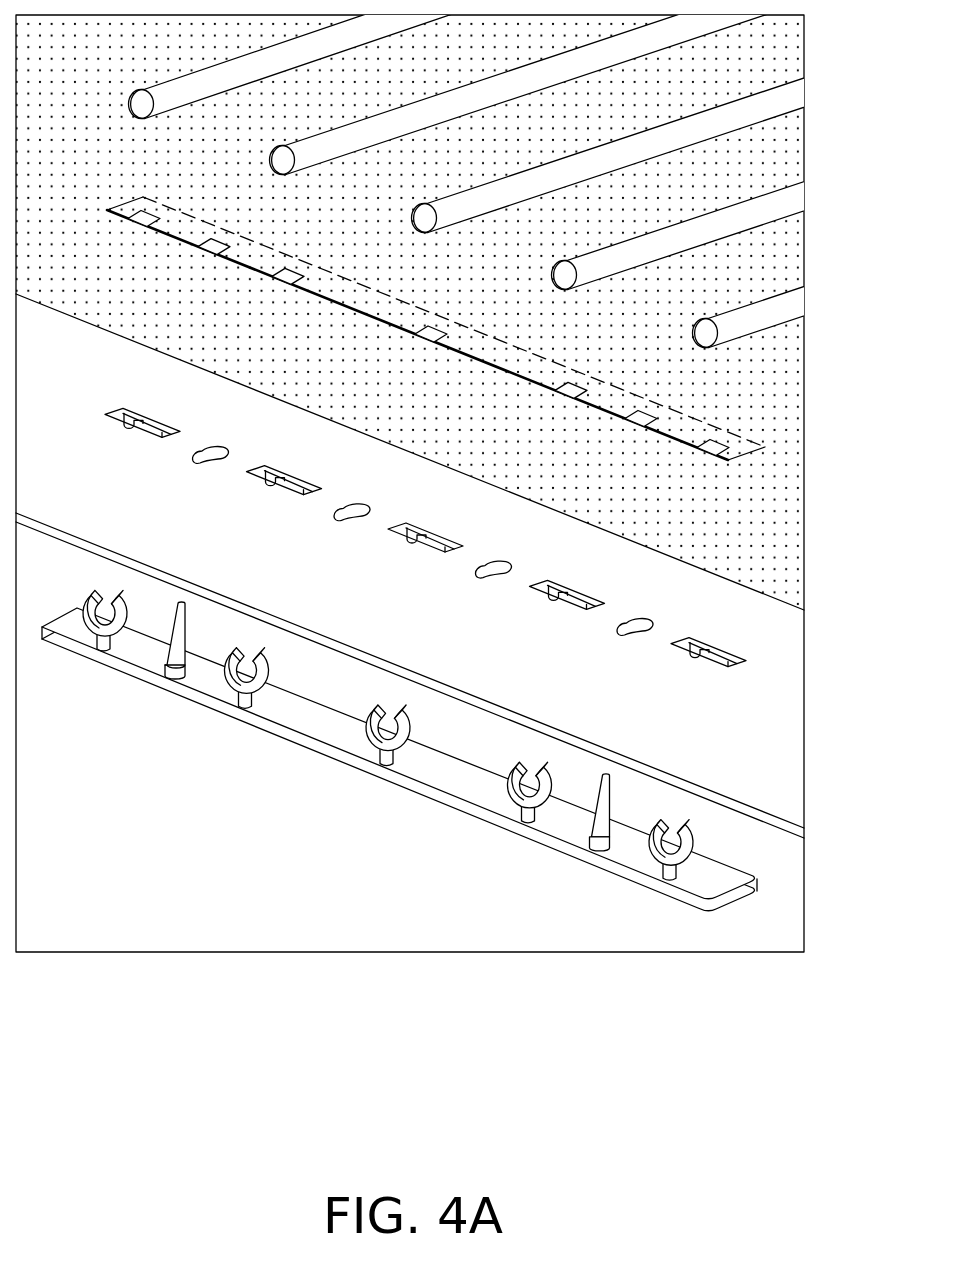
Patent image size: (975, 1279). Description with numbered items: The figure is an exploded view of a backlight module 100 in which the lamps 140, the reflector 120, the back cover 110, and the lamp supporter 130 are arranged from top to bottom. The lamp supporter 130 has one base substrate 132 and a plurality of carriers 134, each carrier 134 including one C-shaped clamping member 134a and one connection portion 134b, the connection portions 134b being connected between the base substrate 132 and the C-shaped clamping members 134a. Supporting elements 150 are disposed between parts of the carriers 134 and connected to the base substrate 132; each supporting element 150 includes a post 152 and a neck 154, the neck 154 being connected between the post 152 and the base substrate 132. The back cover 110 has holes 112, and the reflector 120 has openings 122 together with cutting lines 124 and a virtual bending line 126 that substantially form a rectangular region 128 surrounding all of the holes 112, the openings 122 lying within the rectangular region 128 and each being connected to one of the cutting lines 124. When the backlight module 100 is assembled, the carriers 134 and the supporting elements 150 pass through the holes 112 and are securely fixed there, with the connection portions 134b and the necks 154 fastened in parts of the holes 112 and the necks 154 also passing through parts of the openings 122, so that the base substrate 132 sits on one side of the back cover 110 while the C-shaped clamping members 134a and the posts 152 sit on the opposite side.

The backlight module 100 is at (857, 1046).
The back cover 110 is at (787, 747).
The holes 112 is at (722, 650).
The reflector 120 is at (783, 543).
The openings 122 is at (696, 458).
The cutting lines 124 is at (742, 454).
The virtual bending line 126 is at (737, 434).
The rectangular region 128 is at (688, 412).
The lamp supporter 130 is at (399, 872).
The base substrate 132 is at (710, 890).
The carriers 134 is at (388, 846).
The C-shaped clamping member 134a is at (408, 727).
The connection portion 134b is at (378, 757).
The lamps 140 is at (783, 202).
The supporting elements 150 is at (394, 851).
The post 152 is at (592, 830).
The neck 154 is at (605, 943).